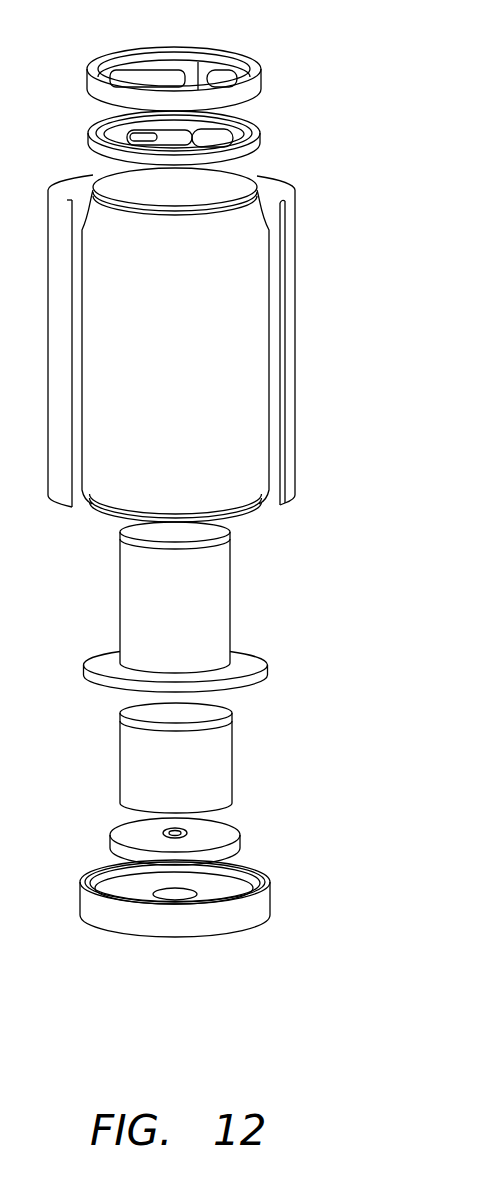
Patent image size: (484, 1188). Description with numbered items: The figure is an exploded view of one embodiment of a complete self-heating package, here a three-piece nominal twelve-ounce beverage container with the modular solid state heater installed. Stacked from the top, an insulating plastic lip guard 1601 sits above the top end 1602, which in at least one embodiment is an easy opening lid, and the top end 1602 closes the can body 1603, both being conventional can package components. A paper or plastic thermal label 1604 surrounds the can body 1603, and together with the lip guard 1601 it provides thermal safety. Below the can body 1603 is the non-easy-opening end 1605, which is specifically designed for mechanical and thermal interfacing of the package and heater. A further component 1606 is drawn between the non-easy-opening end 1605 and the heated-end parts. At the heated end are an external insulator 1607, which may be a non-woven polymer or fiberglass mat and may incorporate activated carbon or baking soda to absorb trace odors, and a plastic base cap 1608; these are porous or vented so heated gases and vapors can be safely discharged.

The insulating plastic lip guard 1601 is at (258, 90).
The top end 1602 is at (258, 138).
The can body 1603 is at (255, 197).
The thermal label 1604 is at (295, 278).
The non-easy-opening (NEO) end 1605 is at (220, 597).
The cylindrical insert 1606 is at (218, 762).
The external insulator 1607 is at (238, 843).
The plastic base cap 1608 is at (263, 902).